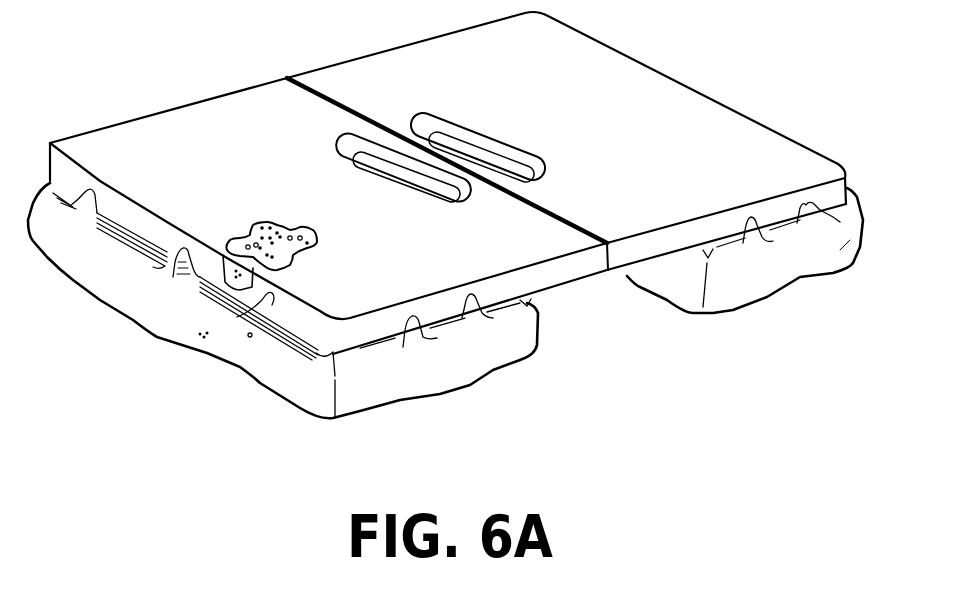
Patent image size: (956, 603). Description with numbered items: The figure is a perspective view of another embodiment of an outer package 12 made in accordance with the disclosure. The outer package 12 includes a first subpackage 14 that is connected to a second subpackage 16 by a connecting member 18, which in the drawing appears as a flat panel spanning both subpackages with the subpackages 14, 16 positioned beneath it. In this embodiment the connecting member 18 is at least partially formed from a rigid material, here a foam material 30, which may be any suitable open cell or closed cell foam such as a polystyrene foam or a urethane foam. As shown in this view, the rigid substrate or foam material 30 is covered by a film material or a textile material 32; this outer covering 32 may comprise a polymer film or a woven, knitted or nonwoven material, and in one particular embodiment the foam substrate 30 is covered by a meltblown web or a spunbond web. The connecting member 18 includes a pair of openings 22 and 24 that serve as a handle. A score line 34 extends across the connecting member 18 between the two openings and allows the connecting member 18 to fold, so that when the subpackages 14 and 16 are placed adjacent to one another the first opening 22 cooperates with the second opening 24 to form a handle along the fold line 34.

The outer package 12 is at (152, 74).
The first subpackage 14 is at (440, 373).
The second subpackage 16 is at (750, 273).
The connecting member 18 is at (698, 115).
The first opening 22 is at (407, 167).
The second opening 24 is at (500, 147).
The foam material 30 is at (293, 228).
The textile material 32 is at (272, 103).
The score line 34 is at (310, 90).